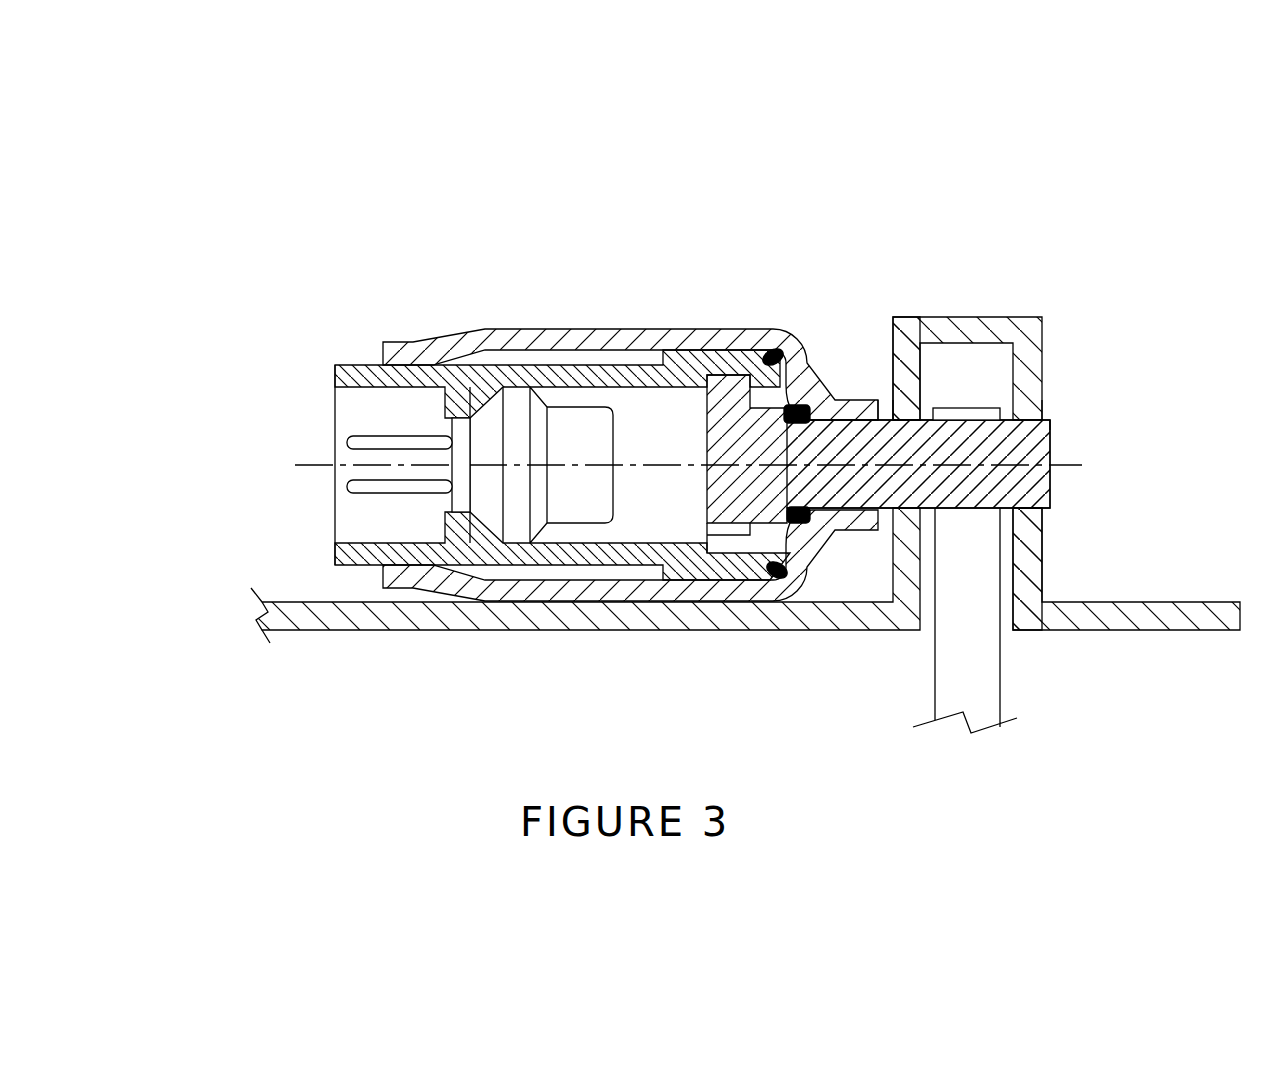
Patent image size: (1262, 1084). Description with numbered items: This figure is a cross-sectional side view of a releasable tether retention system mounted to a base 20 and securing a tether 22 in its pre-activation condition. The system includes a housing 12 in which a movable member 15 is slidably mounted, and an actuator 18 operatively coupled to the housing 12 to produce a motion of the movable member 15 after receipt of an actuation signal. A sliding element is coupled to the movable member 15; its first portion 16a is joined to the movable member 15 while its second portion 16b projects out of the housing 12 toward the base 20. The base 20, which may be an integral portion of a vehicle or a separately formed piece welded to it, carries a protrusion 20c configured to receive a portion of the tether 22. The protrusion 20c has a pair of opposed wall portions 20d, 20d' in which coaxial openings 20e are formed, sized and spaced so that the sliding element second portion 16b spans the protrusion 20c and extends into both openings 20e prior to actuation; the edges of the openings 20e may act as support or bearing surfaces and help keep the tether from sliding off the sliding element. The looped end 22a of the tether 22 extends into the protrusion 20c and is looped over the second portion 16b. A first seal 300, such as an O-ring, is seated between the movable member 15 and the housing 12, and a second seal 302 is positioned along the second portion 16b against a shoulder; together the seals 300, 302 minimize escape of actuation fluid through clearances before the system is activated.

The housing 12 is at (555, 329).
The movable member 15 is at (345, 365).
The actuator 18 is at (345, 490).
The sliding element first portion 16a is at (725, 485).
The sliding element second portion 16b is at (1057, 443).
The base 20 is at (403, 632).
The protrusion 20c is at (957, 303).
The wall portion 20d is at (914, 293).
The opposed wall portion 20d' is at (1114, 559).
The opening 20e is at (898, 410).
The tether 22 is at (978, 668).
The looped end 22a is at (960, 400).
The first seal 300 is at (772, 352).
The second seal 302 is at (805, 527).